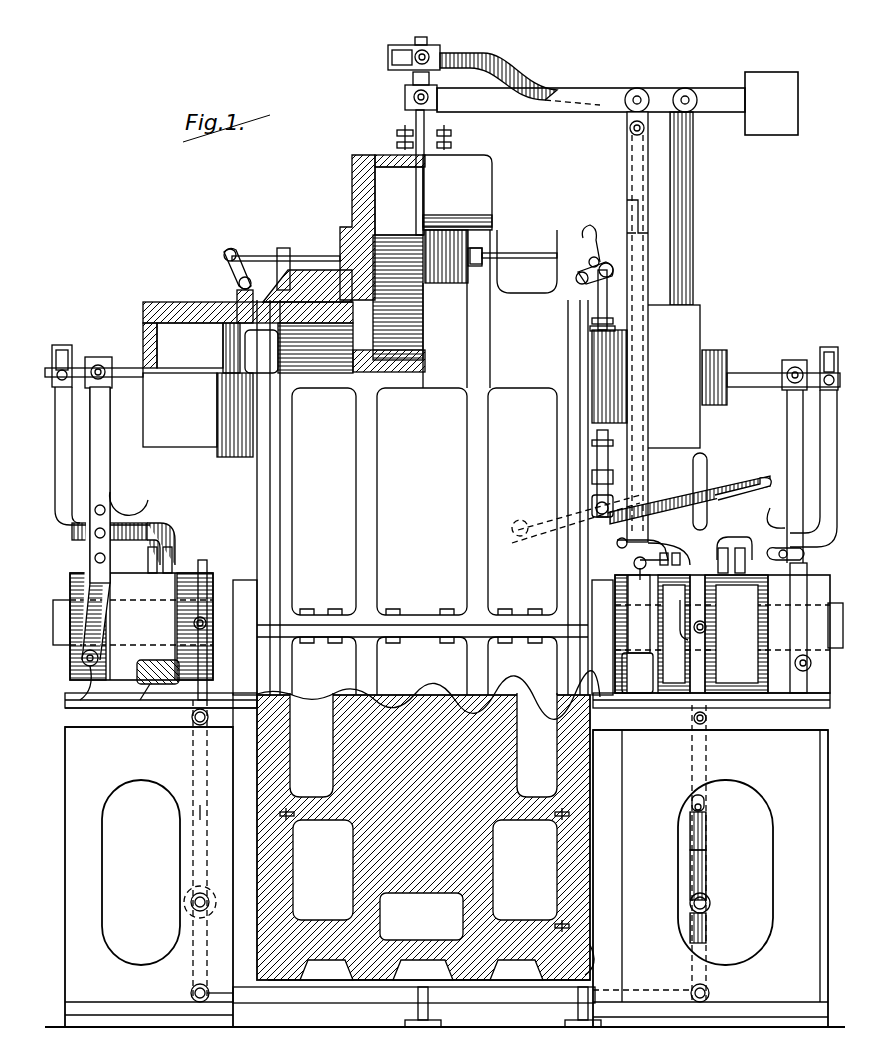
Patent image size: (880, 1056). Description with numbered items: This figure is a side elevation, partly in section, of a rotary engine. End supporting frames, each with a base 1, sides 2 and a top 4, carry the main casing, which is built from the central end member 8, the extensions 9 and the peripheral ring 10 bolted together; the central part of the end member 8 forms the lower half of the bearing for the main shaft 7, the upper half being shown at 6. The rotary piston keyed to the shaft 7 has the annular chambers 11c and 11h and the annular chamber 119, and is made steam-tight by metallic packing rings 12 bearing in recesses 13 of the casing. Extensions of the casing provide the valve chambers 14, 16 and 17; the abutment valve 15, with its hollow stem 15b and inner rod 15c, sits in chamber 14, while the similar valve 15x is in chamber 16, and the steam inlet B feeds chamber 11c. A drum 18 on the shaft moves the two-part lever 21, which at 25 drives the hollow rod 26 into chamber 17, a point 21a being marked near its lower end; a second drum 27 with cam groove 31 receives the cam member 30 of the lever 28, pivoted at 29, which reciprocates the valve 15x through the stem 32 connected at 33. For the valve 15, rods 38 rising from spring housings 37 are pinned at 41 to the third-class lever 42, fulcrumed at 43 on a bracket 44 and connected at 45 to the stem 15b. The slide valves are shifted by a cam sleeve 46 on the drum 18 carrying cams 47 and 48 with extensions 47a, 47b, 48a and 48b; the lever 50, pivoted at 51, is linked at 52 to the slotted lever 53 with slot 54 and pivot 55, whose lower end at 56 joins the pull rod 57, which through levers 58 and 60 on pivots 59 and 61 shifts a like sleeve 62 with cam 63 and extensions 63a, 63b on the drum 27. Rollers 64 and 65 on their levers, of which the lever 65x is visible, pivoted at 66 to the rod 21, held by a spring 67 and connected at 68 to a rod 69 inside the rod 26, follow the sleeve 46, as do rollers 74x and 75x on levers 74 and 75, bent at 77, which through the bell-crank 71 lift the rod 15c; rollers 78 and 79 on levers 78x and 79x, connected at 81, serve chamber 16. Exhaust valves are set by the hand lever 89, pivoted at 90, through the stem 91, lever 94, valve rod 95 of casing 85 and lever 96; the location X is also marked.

The base 1 is at (100, 1010).
The sides 2 is at (446, 877).
The top 4 is at (128, 726).
The upper part of bearing 6 is at (248, 588).
The main shaft 7 is at (208, 602).
The central end member 8 is at (330, 730).
The extension member 9 is at (290, 848).
The peripheral ring 10 is at (423, 837).
The annular chamber 11c is at (421, 916).
The annular chamber 11h is at (520, 877).
The annular chamber 119 is at (325, 881).
The metallic packing rings 12 is at (292, 816).
The recesses 13 is at (548, 790).
The valve chamber 14 is at (344, 228).
The abutment valve 15 is at (422, 271).
The stem 15b is at (408, 118).
The rod 15c is at (432, 45).
The abutment valve 15x is at (288, 348).
The valve chamber 16 is at (248, 335).
The valve chamber 17 is at (666, 376).
The drum 18 is at (825, 617).
The lever 21 is at (790, 418).
The rod end 21a is at (796, 696).
The pivotal connection 25 is at (785, 388).
The hollow rod 26 is at (740, 373).
The drum 27 is at (102, 675).
The lever 28 is at (110, 492).
The pivot 29 is at (161, 710).
The cam member 30 is at (133, 626).
The cam groove 31 is at (112, 650).
The valve stem 32 is at (200, 372).
The pivotal connection 33 is at (108, 357).
The housings 37 is at (637, 682).
The rods 38 is at (628, 242).
The pivot bolt 41 is at (645, 90).
The lever 42 is at (585, 90).
The fulcrum 43 is at (697, 92).
The bracket 44 is at (695, 200).
The pivotal connection 45 is at (405, 95).
The cam sleeve 46 is at (766, 696).
The cam 47 is at (722, 634).
The cam extension 47a is at (735, 679).
The cam extension 47b is at (731, 634).
The cam 48 is at (674, 634).
The cam extension 48a is at (715, 536).
The cam extension 48b is at (676, 620).
The lever 50 is at (706, 470).
The pivot 51 is at (692, 719).
The pivotal connection 52 is at (706, 822).
The lever 53 is at (706, 868).
The slot 54 is at (706, 800).
The pivot 55 is at (712, 908).
The pivotal connection 56 is at (710, 992).
The pull rod 57 is at (478, 998).
The lever 58 is at (195, 960).
The pivot 59 is at (190, 902).
The lever 60 is at (185, 770).
The pivot 61 is at (212, 717).
The slidable sleeve 62 is at (72, 345).
The cam 63 is at (158, 670).
The cam extension 63a is at (189, 613).
The cam extension 63b is at (172, 700).
The cam roller 64 is at (728, 551).
The cam roller 65 is at (752, 551).
The lever 65x is at (780, 491).
The pivotal connection 66 is at (806, 552).
The spring 67 is at (688, 429).
The pivotal connection 68 is at (829, 345).
The rod 69 is at (820, 350).
The bell-crank lever 71 is at (518, 62).
The lever 74 is at (672, 550).
The cam roller 74x is at (637, 634).
The lever 75 is at (630, 205).
The cam roller 75x is at (660, 560).
The bend points 77 is at (617, 538).
The roller 78 is at (147, 560).
The lever 78x is at (90, 440).
The roller 79 is at (174, 572).
The lever 79x is at (176, 533).
The pivotal connection 81 is at (102, 463).
The valve casing 85 is at (453, 256).
The hand lever 89 is at (545, 520).
The pivot 90 is at (519, 537).
The valve stem 91 is at (598, 302).
The lever 94 is at (588, 236).
The valve rod 95 is at (528, 252).
The lever 96 is at (312, 256).
The steam inlet B is at (527, 261).
The bar X is at (690, 500).